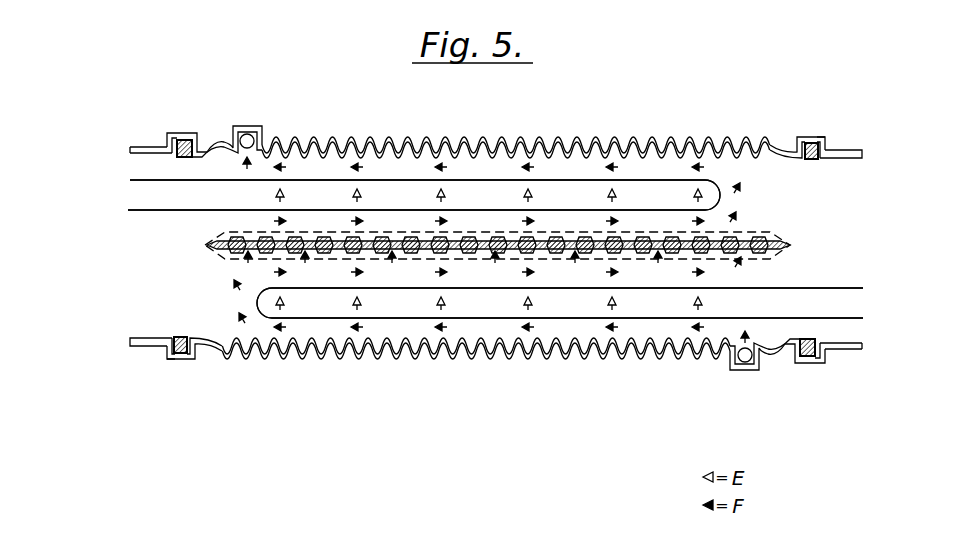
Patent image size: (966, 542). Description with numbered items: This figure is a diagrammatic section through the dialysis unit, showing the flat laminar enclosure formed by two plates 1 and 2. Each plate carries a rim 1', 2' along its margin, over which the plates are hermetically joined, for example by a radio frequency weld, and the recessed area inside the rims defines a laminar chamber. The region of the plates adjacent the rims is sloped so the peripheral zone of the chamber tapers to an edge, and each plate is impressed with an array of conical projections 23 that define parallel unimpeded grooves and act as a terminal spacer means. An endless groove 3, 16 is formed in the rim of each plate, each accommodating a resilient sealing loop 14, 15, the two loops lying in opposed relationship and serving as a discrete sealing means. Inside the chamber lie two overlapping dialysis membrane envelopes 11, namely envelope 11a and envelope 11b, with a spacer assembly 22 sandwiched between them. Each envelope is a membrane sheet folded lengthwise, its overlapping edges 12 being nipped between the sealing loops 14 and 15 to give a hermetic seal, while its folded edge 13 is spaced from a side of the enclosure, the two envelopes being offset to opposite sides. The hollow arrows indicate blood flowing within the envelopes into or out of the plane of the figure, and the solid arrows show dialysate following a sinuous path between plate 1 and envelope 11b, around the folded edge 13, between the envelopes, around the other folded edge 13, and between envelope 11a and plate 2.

The plate 1 is at (485, 372).
The rim 1' is at (504, 386).
The plate 2 is at (508, 127).
The rim 2' is at (508, 126).
The endless groove 3 is at (185, 142).
The dialysis membrane envelopes 11 is at (260, 285).
The dialysis membrane envelope 11a is at (210, 180).
The dialysis membrane envelope 11b is at (793, 318).
The overlapping edges 12 is at (128, 209).
The folded edge 13 is at (718, 198).
The sealing loop 14 is at (198, 148).
The sealing loop 15 is at (170, 353).
The endless groove 16 is at (180, 355).
The spacer assembly 22 is at (790, 245).
The conical projections 23 is at (387, 150).